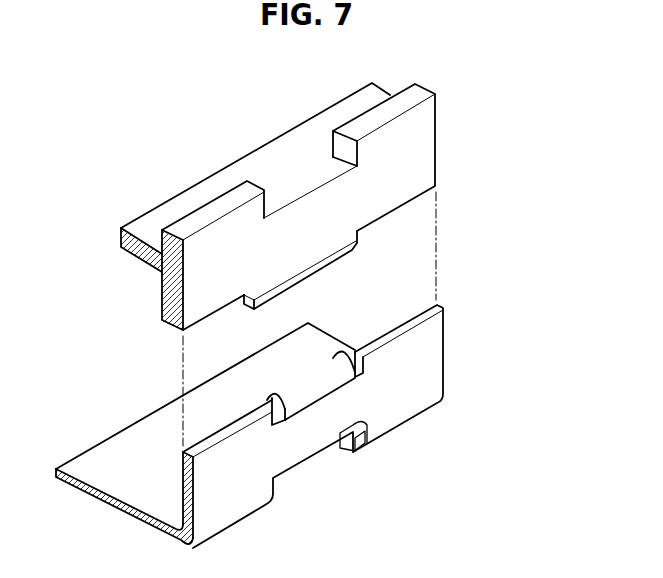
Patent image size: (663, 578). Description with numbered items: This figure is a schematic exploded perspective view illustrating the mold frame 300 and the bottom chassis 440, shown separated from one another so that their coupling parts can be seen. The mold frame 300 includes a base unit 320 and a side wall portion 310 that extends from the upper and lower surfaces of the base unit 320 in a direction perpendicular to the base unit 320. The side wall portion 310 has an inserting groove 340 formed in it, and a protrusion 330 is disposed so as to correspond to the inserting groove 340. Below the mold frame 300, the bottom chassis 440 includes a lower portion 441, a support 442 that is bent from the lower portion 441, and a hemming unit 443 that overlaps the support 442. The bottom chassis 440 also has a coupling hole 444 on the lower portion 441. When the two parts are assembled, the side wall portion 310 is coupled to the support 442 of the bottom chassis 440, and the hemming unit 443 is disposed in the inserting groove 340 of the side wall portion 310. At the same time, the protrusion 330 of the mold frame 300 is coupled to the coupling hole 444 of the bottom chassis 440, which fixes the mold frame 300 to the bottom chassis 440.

The mold frame 300 is at (338, 199).
The side wall portion 310 is at (397, 152).
The base unit 320 is at (376, 93).
The protrusion 330 is at (371, 270).
The inserting groove 340 is at (308, 180).
The bottom chassis 440 is at (305, 426).
The lower portion 441 is at (320, 343).
The support 442 is at (390, 405).
The hemming unit 443 is at (320, 383).
The coupling hole 444 is at (385, 467).